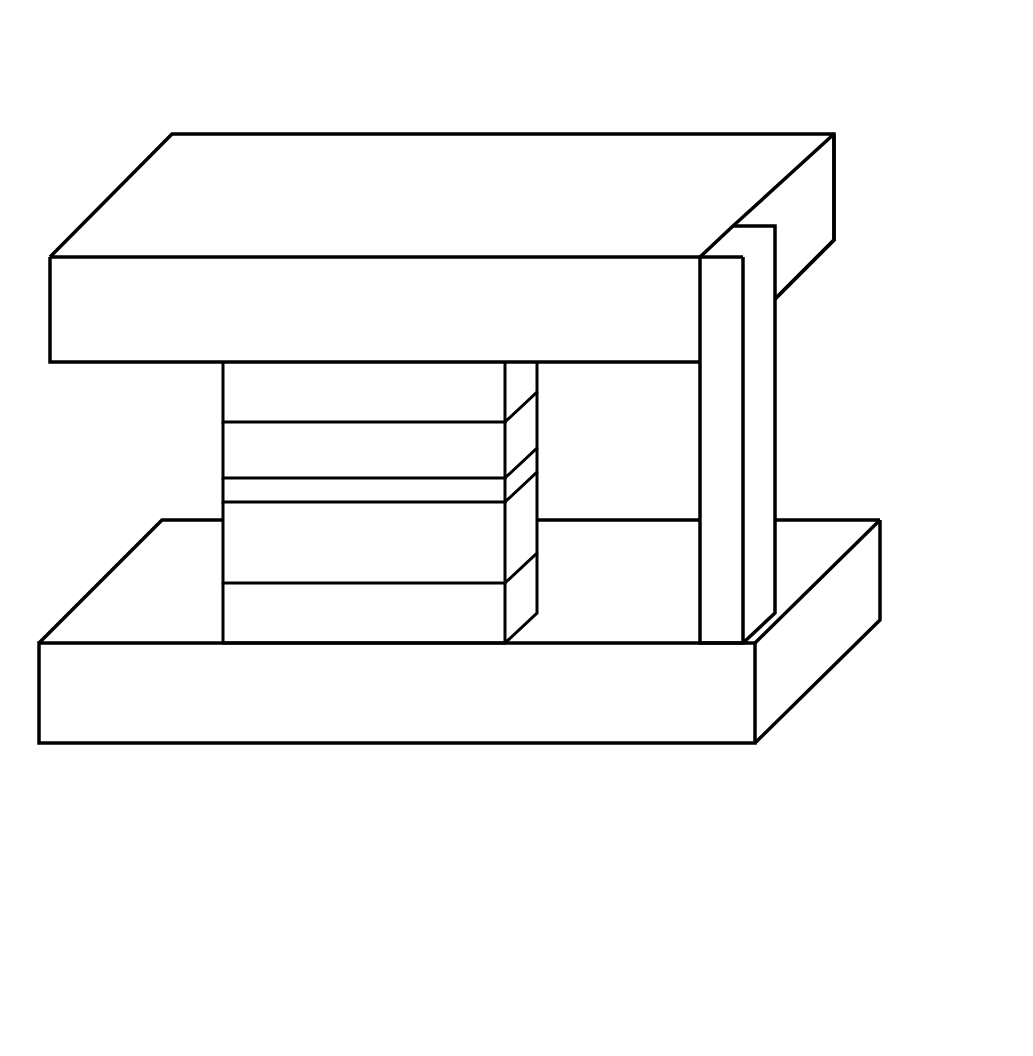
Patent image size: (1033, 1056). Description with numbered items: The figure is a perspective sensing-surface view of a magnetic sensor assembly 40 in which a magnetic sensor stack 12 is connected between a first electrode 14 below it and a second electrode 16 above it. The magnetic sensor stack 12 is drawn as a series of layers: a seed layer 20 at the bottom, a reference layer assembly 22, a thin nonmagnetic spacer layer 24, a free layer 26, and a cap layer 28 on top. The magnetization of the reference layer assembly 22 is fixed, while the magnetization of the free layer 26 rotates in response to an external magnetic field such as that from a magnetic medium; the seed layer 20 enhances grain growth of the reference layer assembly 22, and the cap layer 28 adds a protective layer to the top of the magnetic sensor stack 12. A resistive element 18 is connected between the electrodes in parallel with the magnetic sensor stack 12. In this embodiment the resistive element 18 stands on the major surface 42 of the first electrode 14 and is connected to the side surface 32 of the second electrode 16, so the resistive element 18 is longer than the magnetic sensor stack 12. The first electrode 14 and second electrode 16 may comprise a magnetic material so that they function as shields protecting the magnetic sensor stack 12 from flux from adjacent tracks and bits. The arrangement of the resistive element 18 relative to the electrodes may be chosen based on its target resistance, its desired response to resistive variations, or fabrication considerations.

The magnetic sensor stack 12 is at (175, 450).
The first electrode 14 is at (467, 600).
The second electrode 16 is at (482, 248).
The resistive element 18 is at (763, 440).
The seed layer 20 is at (380, 598).
The reference layer assembly 22 is at (380, 527).
The nonmagnetic spacer layer 24 is at (533, 463).
The free layer 26 is at (380, 435).
The cap layer 28 is at (380, 392).
The side surface 32 is at (838, 213).
The magnetic sensor assembly 40 is at (758, 77).
The major surface 42 is at (820, 512).